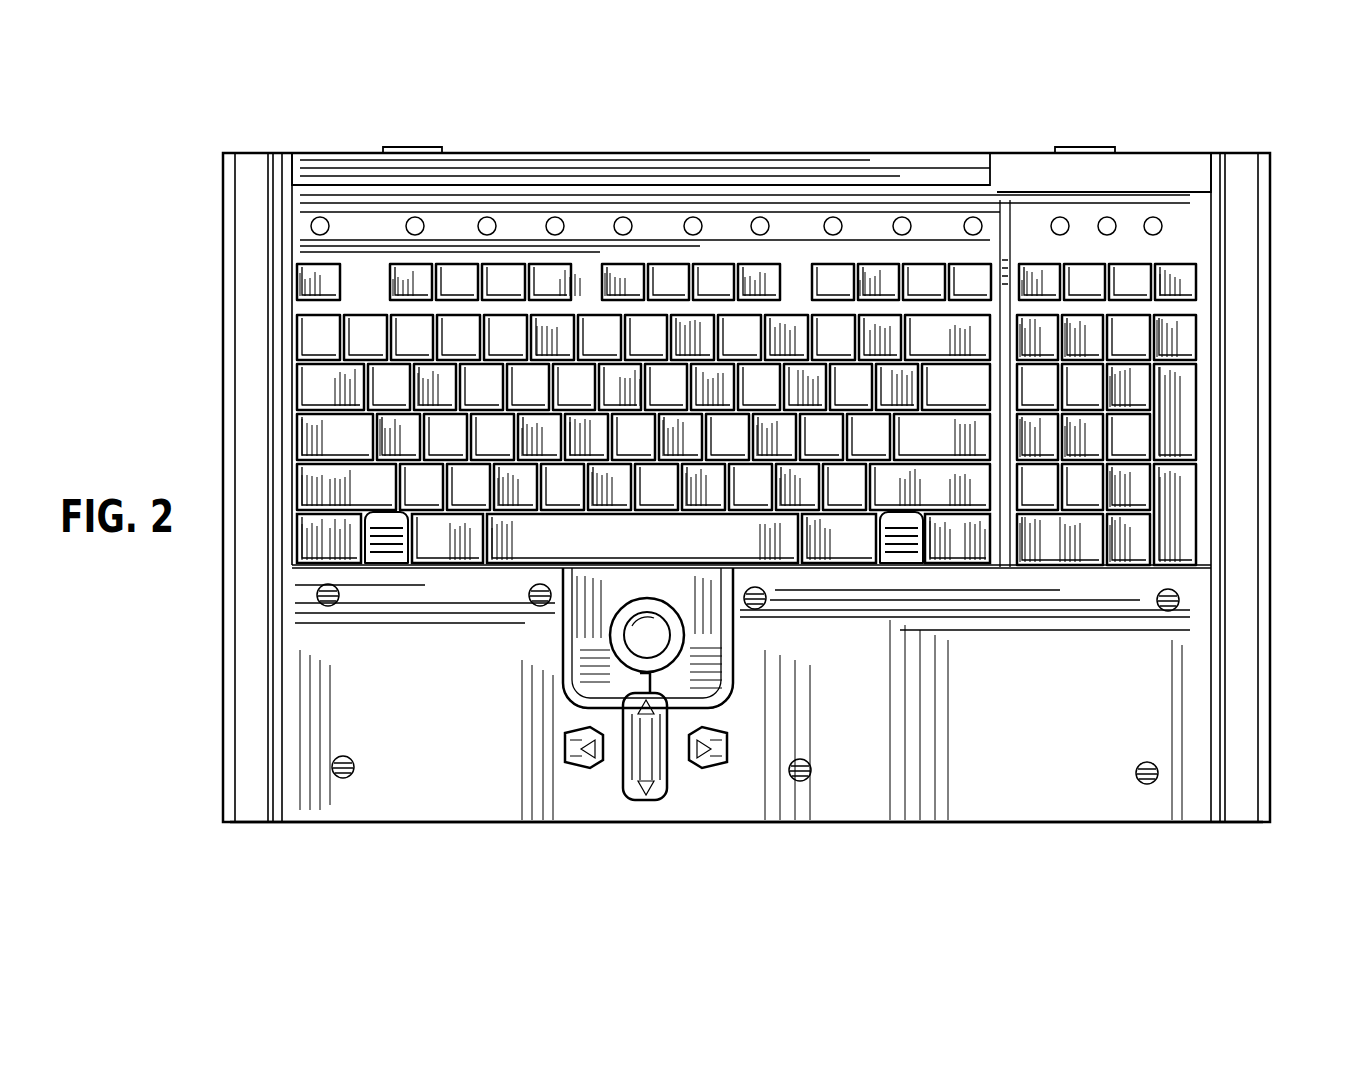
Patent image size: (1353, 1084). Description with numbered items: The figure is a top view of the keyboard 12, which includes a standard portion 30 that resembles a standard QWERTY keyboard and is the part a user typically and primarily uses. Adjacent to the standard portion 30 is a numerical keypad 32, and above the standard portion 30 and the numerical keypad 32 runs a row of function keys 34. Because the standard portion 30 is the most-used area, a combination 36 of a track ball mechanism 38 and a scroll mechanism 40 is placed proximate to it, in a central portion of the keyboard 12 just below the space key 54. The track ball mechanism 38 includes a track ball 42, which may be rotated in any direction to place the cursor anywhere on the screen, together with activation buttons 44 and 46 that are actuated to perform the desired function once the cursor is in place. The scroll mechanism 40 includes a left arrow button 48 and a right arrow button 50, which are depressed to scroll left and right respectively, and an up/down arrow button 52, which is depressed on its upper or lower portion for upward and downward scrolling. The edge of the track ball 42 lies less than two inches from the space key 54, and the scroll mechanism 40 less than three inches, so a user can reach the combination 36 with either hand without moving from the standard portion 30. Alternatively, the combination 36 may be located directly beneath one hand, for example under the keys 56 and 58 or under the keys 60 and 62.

The keyboard 12 is at (340, 140).
The standard portion 30 is at (290, 409).
The numerical keypad 32 is at (1202, 344).
The row of function keys 34 is at (1202, 279).
The combination 36 is at (584, 836).
The track ball mechanism 38 is at (557, 637).
The scroll mechanism 40 is at (665, 793).
The track ball 42 is at (655, 628).
The activation button 44 is at (570, 670).
The activation button 46 is at (705, 680).
The left arrow button 48 is at (567, 750).
The right arrow button 50 is at (707, 762).
The up/down arrow button 52 is at (670, 796).
The space key 54 is at (781, 566).
The key 56 is at (348, 562).
The key 58 is at (433, 562).
The key 60 is at (865, 565).
The key 62 is at (963, 565).